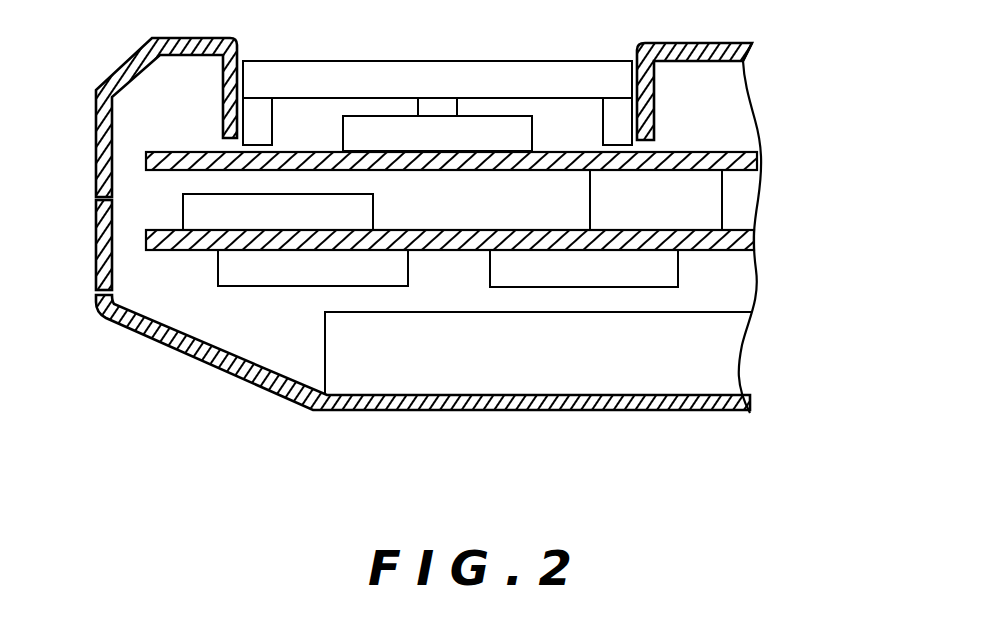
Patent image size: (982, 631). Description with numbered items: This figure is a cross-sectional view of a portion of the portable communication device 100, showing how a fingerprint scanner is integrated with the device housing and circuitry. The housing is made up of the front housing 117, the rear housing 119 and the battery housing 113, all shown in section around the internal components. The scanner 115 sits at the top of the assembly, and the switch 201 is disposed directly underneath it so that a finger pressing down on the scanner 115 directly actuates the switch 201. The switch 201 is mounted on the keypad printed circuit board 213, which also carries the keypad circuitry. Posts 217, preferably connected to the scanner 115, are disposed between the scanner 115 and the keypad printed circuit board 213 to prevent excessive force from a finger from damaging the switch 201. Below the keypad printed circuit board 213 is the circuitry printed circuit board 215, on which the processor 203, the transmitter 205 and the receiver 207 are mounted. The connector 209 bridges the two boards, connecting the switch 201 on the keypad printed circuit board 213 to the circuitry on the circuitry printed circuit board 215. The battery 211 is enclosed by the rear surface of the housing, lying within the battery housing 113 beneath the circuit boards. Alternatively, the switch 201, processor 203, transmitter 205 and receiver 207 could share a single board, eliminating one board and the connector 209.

The portable communication device 100 is at (425, 254).
The battery housing 113 is at (185, 350).
The scanner 115 is at (578, 75).
The front housing 117 is at (102, 130).
The rear housing 119 is at (102, 244).
The switch 201 is at (367, 125).
The processor 203 is at (362, 210).
The transmitter 205 is at (395, 278).
The receiver 207 is at (665, 282).
The connector 209 is at (712, 203).
The battery 211 is at (558, 388).
The keypad printed circuit board 213 is at (757, 160).
The circuitry printed circuit board 215 is at (750, 242).
The posts 217 is at (253, 126).